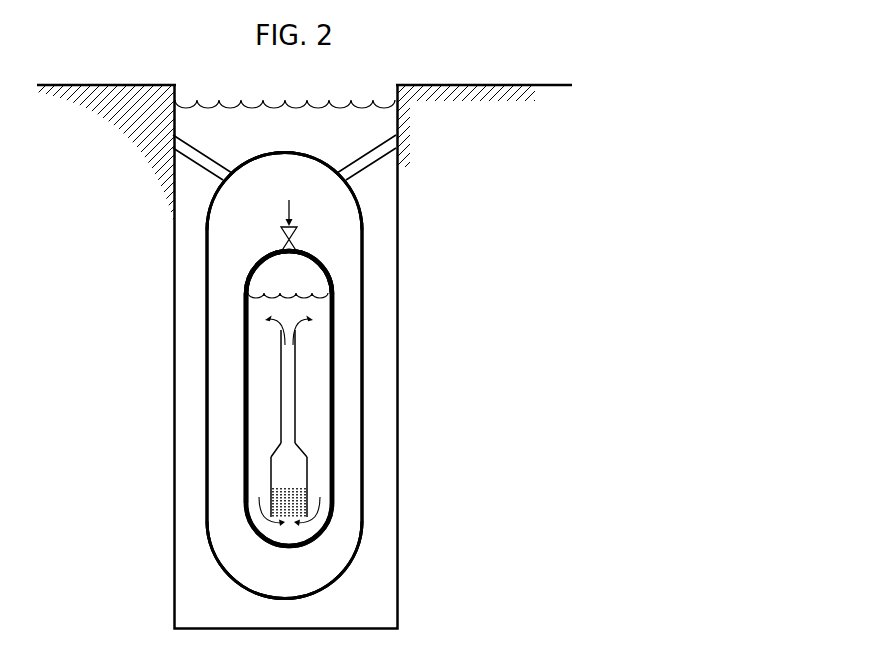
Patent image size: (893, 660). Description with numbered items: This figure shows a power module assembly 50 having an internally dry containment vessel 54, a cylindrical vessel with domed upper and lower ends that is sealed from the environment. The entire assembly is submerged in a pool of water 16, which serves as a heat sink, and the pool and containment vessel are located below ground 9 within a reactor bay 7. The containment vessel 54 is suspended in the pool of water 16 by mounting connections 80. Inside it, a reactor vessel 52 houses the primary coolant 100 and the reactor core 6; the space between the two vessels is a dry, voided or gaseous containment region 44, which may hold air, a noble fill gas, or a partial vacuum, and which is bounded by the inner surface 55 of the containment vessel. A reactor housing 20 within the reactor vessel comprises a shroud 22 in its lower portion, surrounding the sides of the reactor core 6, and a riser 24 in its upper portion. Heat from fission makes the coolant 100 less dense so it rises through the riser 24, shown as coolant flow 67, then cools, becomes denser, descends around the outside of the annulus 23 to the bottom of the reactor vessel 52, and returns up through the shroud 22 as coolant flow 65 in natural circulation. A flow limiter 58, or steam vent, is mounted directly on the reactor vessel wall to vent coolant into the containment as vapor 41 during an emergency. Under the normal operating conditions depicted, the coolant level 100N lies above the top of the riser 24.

The reactor core 6 is at (308, 493).
The reactor bay 7 is at (168, 547).
The ground 9 is at (552, 100).
The pool of water 16 is at (223, 141).
The reactor housing 20 is at (258, 424).
The shroud 22 is at (315, 472).
The annulus 23 is at (305, 443).
The riser 24 is at (308, 337).
The vapor 41 is at (277, 273).
The containment region 44 is at (248, 207).
The power module assembly 50 is at (190, 237).
The reactor vessel 52 is at (338, 273).
The containment vessel 54 is at (370, 242).
The inner surface 55 is at (322, 580).
The flow limiter 58 is at (300, 228).
The coolant flow 65 is at (328, 510).
The coolant flow 67 is at (258, 315).
The mounting connections 80 is at (363, 143).
The primary coolant 100 is at (262, 368).
The coolant level 100N is at (319, 287).